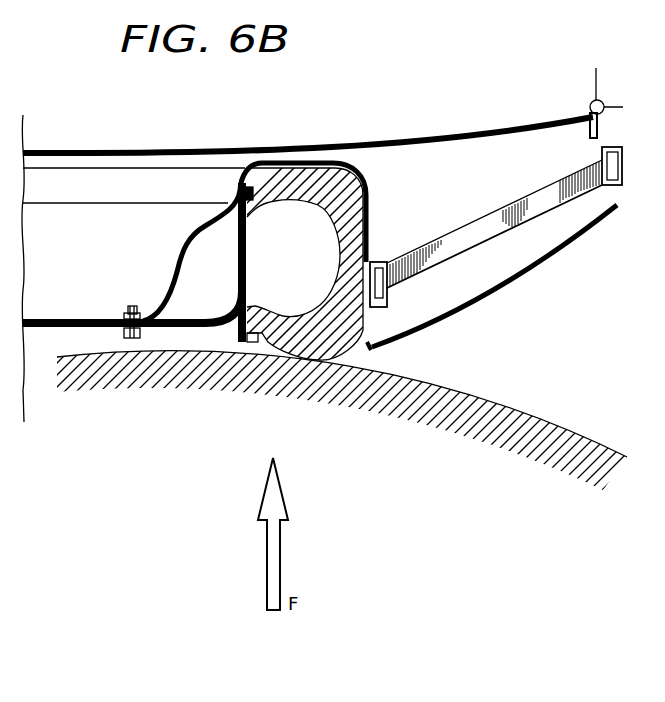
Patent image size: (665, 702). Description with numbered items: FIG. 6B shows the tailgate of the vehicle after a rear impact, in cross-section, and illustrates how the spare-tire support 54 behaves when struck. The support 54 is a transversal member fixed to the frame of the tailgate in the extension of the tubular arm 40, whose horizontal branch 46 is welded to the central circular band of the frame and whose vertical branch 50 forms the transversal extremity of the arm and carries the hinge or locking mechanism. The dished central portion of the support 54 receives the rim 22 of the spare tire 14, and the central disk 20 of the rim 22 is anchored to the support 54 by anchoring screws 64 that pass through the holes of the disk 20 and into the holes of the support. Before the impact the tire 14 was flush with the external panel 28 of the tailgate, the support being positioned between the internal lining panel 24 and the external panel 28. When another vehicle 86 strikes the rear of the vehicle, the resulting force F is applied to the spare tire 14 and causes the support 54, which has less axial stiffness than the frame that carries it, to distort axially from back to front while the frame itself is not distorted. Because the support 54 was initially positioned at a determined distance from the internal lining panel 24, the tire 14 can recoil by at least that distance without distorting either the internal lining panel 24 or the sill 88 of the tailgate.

The spare tire 14 is at (308, 185).
The central disk 20 is at (186, 332).
The rim 22 is at (262, 253).
The internal lining panel 24 is at (390, 135).
The external panel 28 is at (581, 266).
The arm 40 is at (433, 240).
The horizontal branch 46 is at (505, 212).
The vertical branch 50 is at (622, 166).
The support 54 is at (180, 250).
The anchoring screws 64 is at (133, 345).
The another vehicle 86 is at (540, 410).
The sill 88 is at (594, 85).